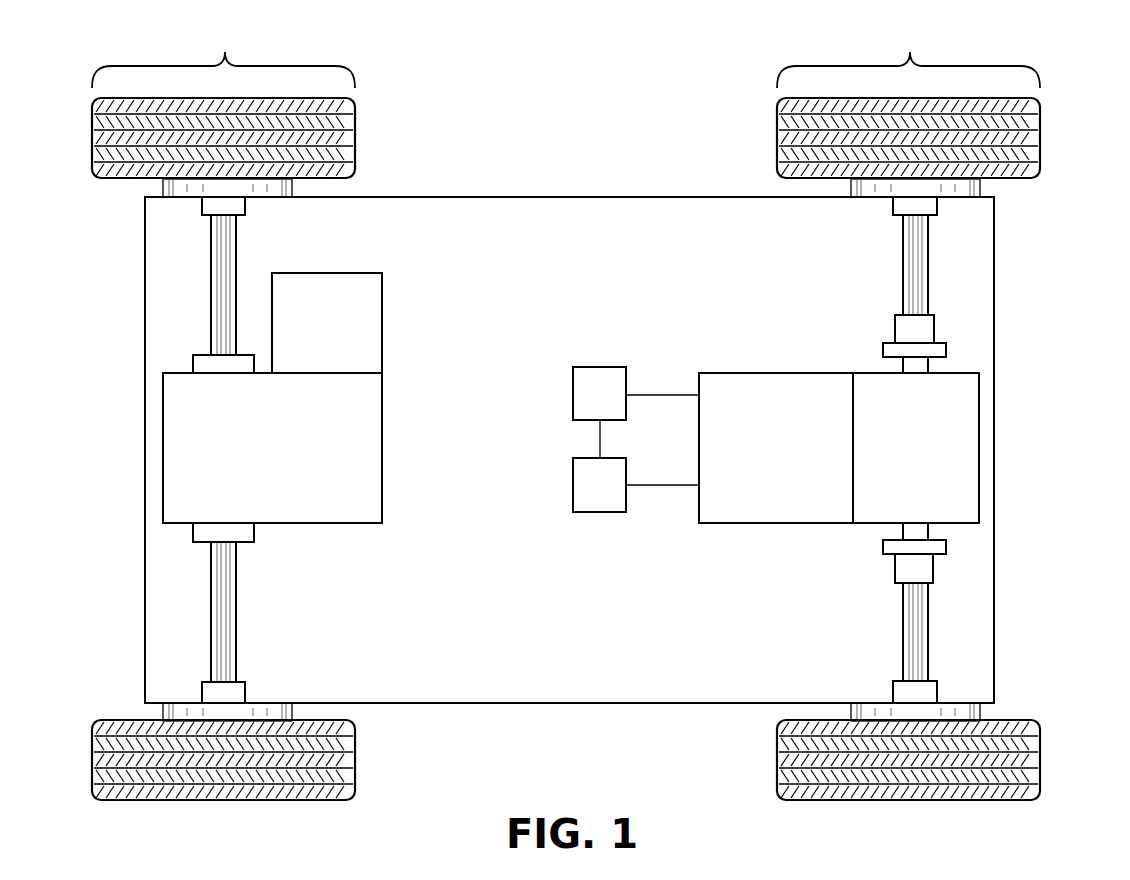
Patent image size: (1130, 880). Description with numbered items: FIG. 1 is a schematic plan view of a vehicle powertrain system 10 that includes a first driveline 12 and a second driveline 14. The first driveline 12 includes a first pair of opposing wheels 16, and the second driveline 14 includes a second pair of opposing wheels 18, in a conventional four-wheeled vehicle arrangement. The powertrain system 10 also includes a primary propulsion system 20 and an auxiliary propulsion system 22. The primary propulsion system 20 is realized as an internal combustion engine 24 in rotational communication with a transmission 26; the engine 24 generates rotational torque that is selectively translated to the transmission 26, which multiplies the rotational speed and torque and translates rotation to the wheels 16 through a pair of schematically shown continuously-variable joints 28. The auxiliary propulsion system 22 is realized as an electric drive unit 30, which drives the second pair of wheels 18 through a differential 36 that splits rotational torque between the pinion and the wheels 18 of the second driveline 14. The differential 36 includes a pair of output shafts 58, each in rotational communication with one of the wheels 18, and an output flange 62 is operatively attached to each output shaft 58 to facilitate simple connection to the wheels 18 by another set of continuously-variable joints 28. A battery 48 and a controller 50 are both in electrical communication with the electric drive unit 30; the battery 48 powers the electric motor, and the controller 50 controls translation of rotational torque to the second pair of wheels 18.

The vehicle powertrain system 10 is at (550, 148).
The first driveline 12 is at (223, 57).
The second driveline 14 is at (908, 57).
The first pair of opposing wheels 16 is at (355, 135).
The second pair of opposing wheels 18 is at (1040, 135).
The primary propulsion system 20 is at (160, 462).
The auxiliary propulsion system 22 is at (853, 528).
The internal combustion engine 24 is at (327, 323).
The transmission 26 is at (272, 448).
The continuously-variable joints 28 is at (208, 303).
The electric drive unit 30 is at (757, 372).
The differential 36 is at (946, 425).
The battery 48 is at (636, 412).
The controller 50 is at (636, 485).
The output shafts 58 is at (925, 363).
The output flange 62 is at (940, 350).